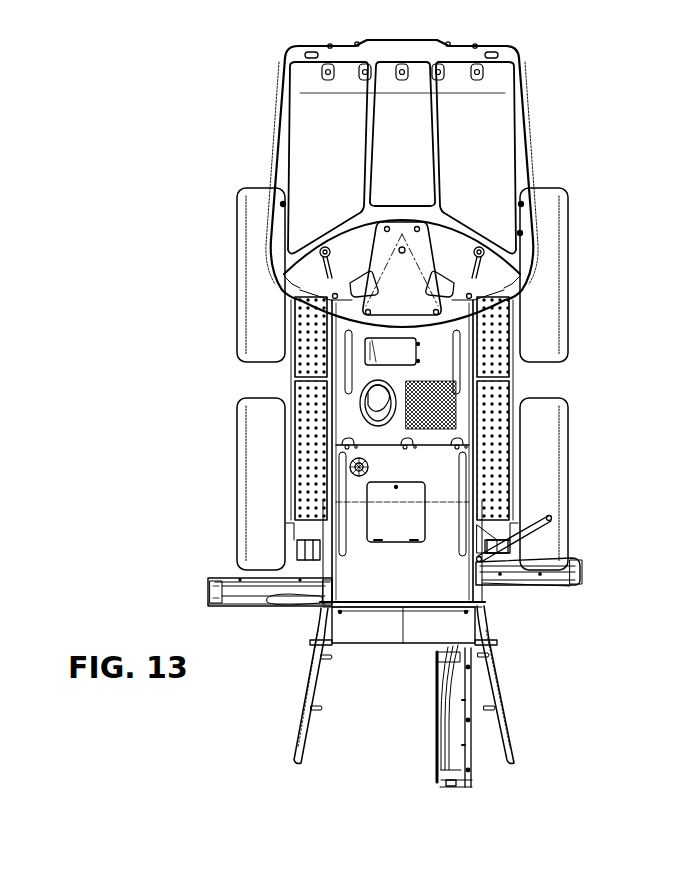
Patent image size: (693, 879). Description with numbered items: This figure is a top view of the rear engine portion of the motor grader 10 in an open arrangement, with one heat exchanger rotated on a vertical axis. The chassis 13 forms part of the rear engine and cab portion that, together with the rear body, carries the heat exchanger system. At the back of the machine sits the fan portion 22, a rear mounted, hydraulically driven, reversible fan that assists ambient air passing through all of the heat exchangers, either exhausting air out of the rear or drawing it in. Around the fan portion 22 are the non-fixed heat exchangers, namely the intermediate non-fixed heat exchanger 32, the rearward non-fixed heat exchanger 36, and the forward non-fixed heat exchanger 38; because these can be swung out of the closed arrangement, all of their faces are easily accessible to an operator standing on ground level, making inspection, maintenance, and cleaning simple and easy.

The motor grader 10 is at (136, 216).
The chassis 13 is at (410, 527).
The fan portion 22 is at (476, 779).
The intermediate non-fixed heat exchanger 32 is at (578, 582).
The rearward non-fixed heat exchanger 36 is at (227, 575).
The forward non-fixed heat exchanger 38 is at (547, 517).